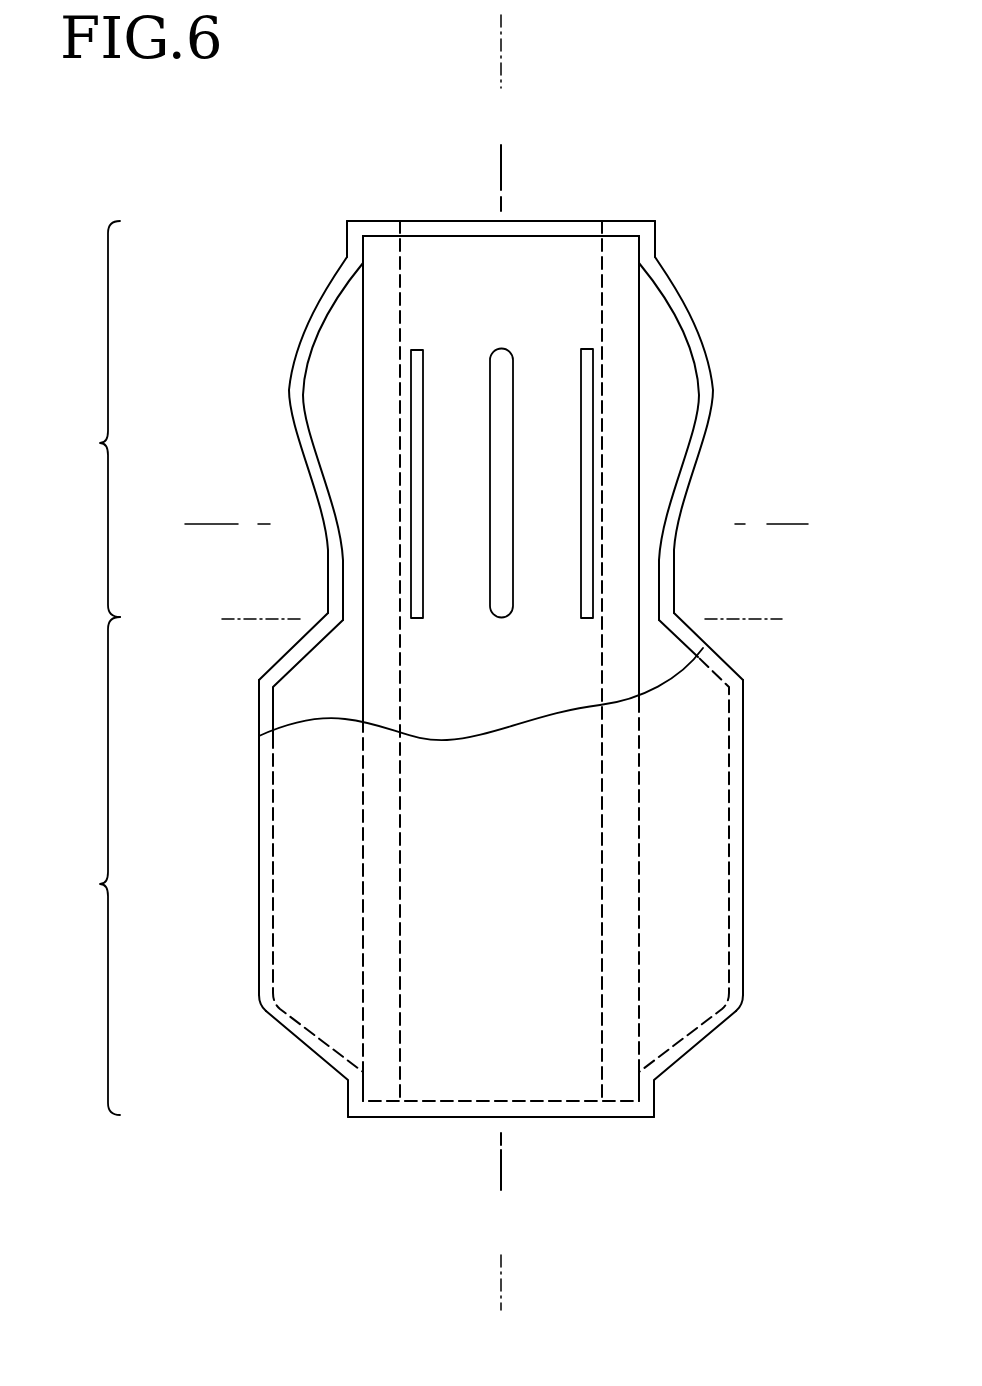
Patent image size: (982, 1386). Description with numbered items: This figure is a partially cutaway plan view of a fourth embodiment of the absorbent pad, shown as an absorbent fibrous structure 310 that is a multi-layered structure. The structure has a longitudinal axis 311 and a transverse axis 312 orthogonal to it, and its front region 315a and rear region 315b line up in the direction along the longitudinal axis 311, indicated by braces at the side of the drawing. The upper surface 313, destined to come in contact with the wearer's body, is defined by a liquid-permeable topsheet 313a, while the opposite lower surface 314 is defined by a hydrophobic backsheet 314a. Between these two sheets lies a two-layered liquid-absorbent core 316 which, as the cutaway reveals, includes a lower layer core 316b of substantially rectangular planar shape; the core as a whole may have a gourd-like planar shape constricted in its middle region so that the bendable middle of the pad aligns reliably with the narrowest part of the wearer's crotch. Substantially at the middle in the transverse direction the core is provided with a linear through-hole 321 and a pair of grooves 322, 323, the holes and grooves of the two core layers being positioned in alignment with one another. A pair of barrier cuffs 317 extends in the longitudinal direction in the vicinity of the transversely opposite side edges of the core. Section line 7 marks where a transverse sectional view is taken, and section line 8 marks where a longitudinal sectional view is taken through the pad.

The absorbent fibrous structure 310 is at (645, 96).
The longitudinal axis 311 is at (505, 672).
The transverse axis 312 is at (504, 620).
The upper surface 313 is at (267, 785).
The topsheet 313a is at (325, 297).
The lower surface 314 is at (265, 917).
The backsheet 314a is at (267, 997).
The front region 315a is at (70, 419).
The rear region 315b is at (70, 866).
The liquid-absorbent core 316 is at (665, 297).
The lower layer core 316b is at (377, 437).
The barrier cuff 317 is at (345, 1033).
The linear through-hole 321 is at (500, 610).
The groove 322 is at (415, 360).
The groove 323 is at (583, 360).
The section line 7- 7 is at (506, 525).
The section line 8- 8 is at (501, 671).